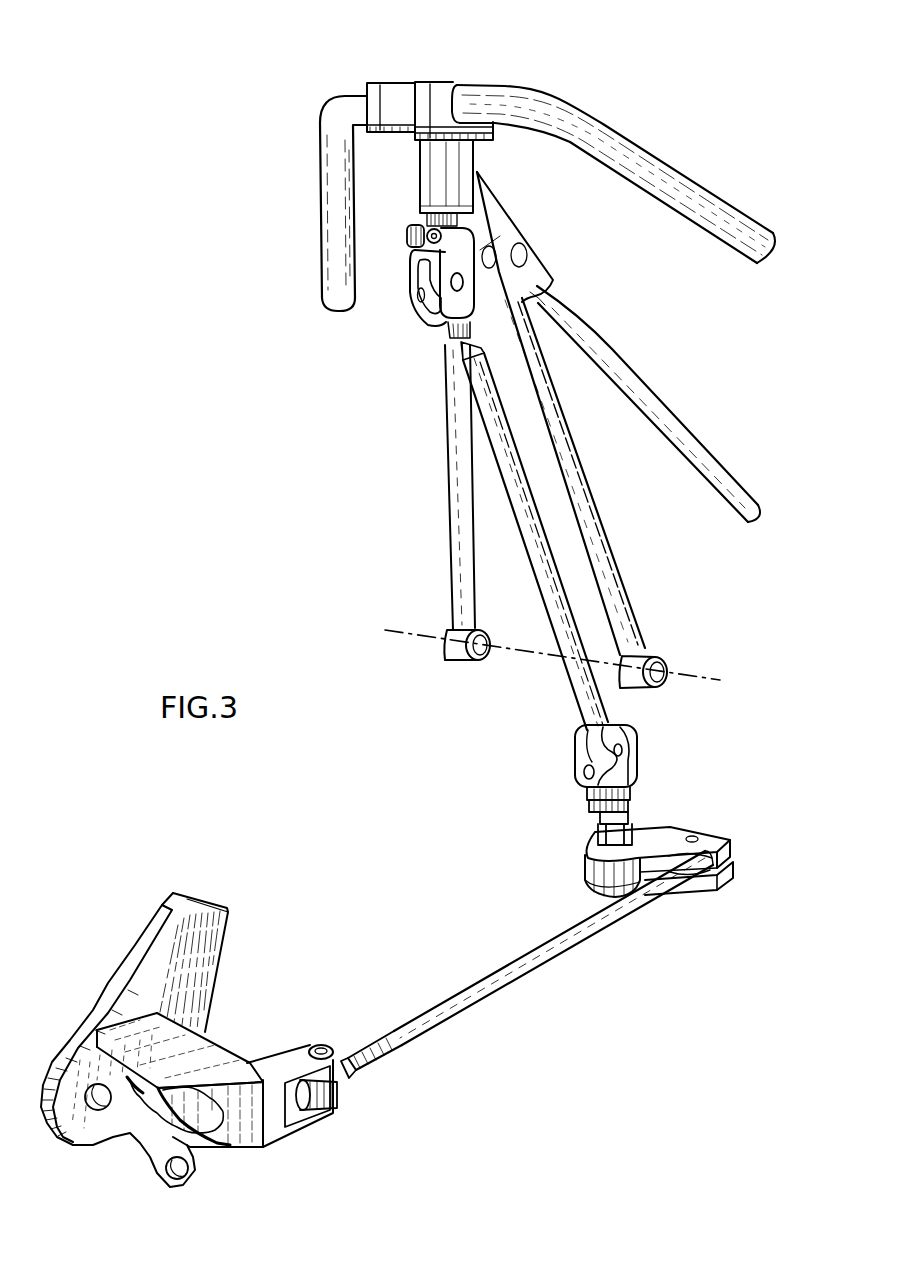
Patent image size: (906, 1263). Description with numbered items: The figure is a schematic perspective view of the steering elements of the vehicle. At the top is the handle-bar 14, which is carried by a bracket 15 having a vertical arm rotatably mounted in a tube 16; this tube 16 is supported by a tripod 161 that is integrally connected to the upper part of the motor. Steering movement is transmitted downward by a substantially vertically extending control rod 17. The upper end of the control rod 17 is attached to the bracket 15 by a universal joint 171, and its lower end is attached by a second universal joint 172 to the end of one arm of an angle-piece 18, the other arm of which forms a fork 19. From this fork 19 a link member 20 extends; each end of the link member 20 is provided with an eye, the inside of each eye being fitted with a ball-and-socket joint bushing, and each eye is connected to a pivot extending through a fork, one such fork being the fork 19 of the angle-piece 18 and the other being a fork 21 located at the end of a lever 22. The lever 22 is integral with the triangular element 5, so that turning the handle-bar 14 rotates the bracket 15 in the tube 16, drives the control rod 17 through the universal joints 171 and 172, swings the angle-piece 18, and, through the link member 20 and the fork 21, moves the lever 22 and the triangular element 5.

The triangular element 5 is at (147, 980).
The handle-bar 14 is at (647, 177).
The bracket 15 is at (448, 82).
The tube 16 is at (432, 183).
The tripod 161 is at (537, 268).
The control rod 17 is at (537, 552).
The universal joint 171 is at (420, 308).
The universal joint 172 is at (577, 757).
The angle-piece 18 is at (633, 830).
The fork 19 is at (710, 837).
The link member 20 is at (510, 963).
The fork 21 is at (310, 1133).
The lever 22 is at (232, 1137).